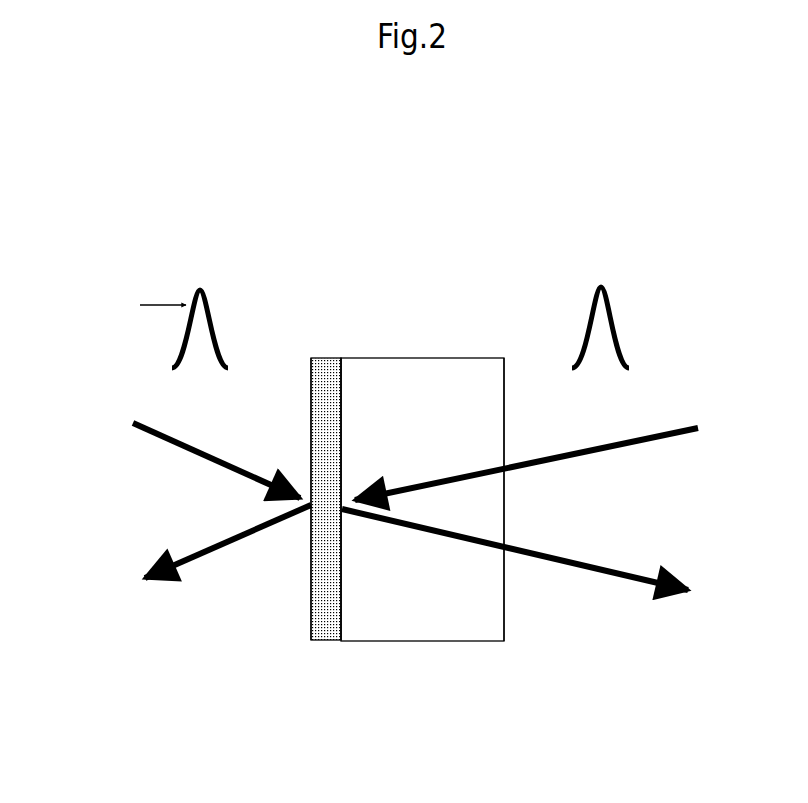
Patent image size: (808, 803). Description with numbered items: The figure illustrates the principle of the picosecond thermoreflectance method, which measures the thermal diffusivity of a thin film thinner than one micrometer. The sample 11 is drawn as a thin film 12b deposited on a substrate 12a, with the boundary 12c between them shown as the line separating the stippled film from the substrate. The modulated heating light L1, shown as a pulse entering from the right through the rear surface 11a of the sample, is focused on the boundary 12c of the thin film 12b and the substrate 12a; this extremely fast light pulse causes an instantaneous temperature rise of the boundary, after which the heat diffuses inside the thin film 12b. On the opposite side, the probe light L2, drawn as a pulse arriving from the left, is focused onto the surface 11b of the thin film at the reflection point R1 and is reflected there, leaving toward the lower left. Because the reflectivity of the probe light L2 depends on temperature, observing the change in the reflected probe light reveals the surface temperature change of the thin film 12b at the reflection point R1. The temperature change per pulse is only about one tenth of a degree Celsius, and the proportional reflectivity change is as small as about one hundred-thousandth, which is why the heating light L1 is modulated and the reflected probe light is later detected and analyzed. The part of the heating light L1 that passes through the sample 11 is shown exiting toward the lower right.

The sample 11 is at (406, 515).
The rear surface of sample 11a is at (518, 650).
The surface of sample 11b is at (311, 610).
The substrate 12a is at (467, 641).
The thin film 12b is at (313, 640).
The boundary 12c is at (341, 388).
The reflection point R1 is at (330, 497).
The heating light L1 is at (558, 410).
The probe light L2 is at (210, 404).